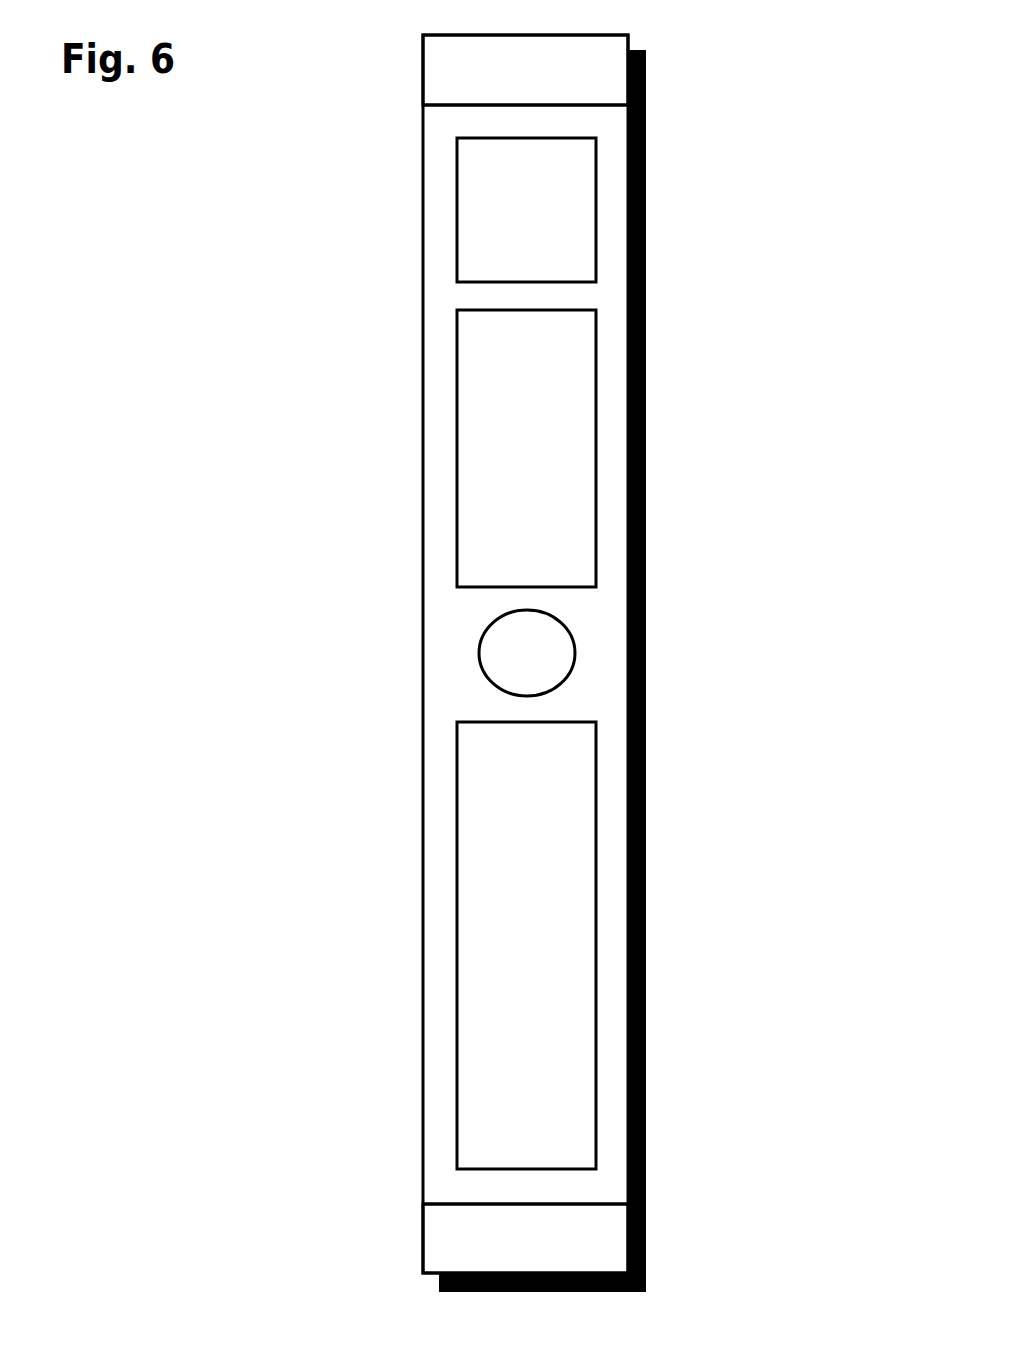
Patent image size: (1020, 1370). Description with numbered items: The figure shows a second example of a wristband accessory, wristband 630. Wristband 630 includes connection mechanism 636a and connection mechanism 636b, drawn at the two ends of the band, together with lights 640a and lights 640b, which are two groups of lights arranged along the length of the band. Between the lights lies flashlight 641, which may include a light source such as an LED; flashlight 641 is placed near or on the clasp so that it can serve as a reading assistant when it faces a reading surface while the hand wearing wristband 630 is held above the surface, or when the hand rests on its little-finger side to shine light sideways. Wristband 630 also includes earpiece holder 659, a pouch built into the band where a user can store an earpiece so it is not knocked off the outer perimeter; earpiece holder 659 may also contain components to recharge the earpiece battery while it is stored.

The wristband 630 is at (819, 119).
The connection mechanism 636a is at (611, 96).
The connection mechanism 636b is at (611, 1262).
The earpiece holder 659 is at (582, 234).
The lights 640a is at (585, 458).
The lights 640b is at (586, 952).
The flashlight 641 is at (482, 673).